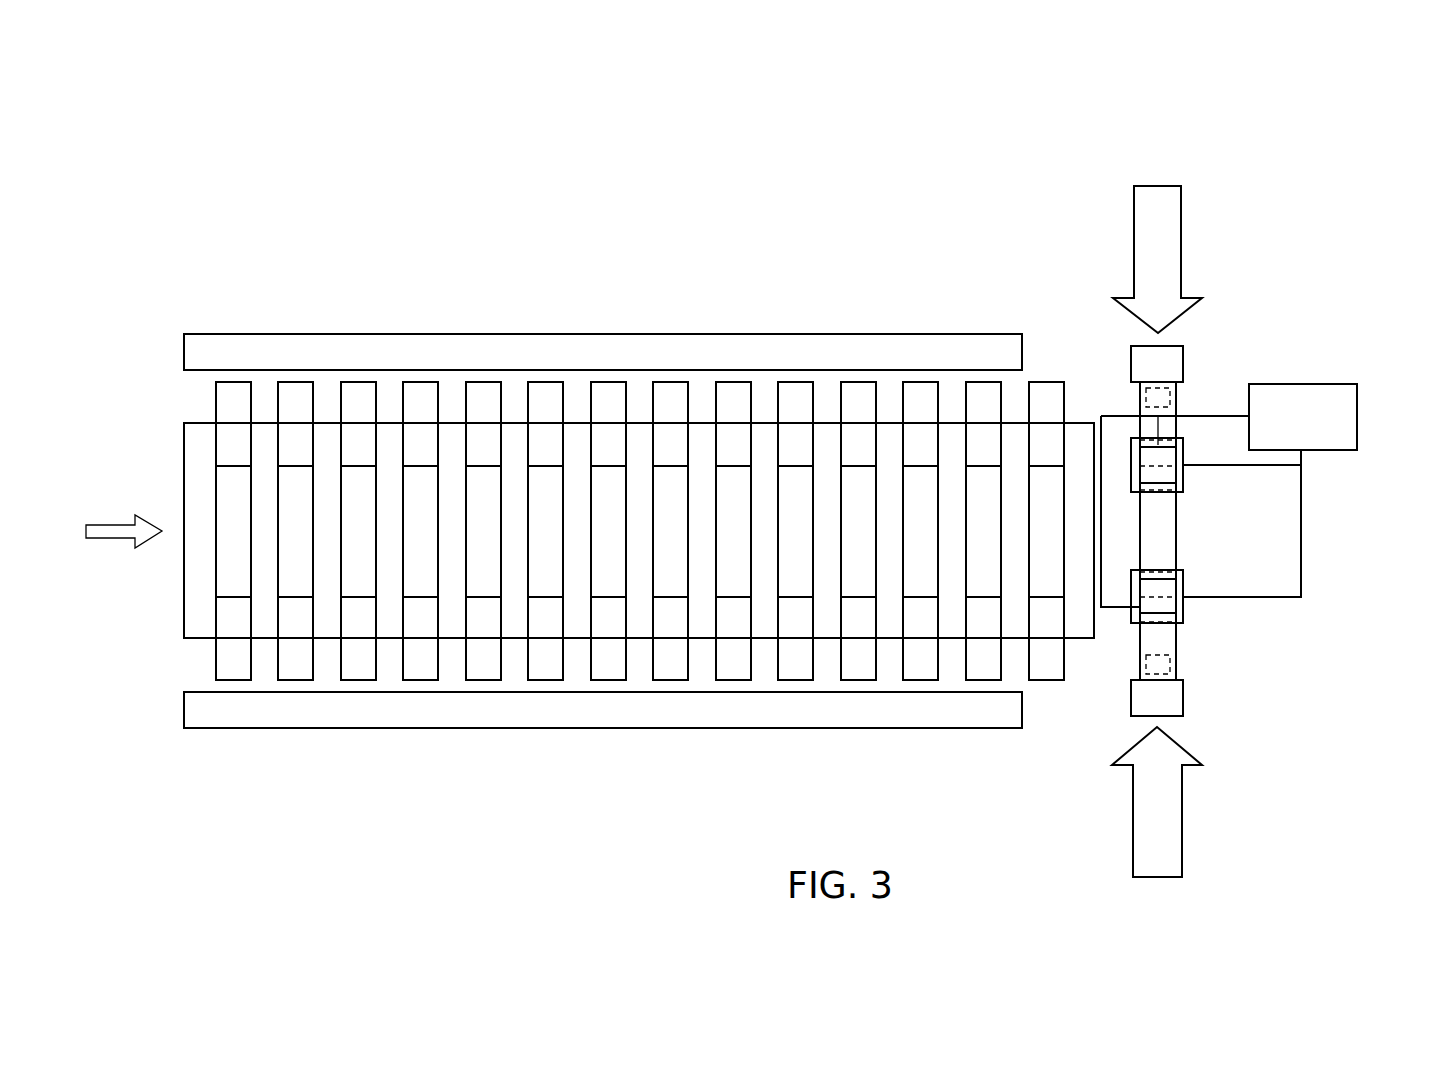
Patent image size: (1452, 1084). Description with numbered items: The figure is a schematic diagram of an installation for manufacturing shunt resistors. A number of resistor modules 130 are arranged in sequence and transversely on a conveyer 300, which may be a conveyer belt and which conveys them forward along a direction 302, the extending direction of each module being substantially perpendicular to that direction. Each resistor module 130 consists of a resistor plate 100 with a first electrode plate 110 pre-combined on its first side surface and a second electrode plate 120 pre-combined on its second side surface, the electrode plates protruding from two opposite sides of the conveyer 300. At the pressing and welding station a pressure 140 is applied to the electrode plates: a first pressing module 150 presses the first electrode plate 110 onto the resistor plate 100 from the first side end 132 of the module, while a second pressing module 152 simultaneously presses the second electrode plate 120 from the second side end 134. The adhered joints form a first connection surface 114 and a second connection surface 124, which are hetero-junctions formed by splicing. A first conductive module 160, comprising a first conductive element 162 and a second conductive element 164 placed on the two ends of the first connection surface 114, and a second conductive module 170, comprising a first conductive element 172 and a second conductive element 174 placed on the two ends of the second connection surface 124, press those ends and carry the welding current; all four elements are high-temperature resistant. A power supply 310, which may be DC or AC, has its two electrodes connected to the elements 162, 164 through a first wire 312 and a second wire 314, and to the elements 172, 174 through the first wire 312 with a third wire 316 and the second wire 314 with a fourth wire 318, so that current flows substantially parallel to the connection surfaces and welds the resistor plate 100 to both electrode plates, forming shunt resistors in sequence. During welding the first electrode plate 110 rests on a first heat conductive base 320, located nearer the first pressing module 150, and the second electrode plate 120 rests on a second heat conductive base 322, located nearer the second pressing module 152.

The resistor plate 100 is at (1047, 522).
The first electrode plate 110 is at (1047, 445).
The second electrode plate 120 is at (1045, 627).
The resistor module 130 is at (640, 424).
The first connection surface 114 is at (1131, 462).
The second connection surface 124 is at (1134, 604).
The first side end 132 is at (1168, 376).
The second side end 134 is at (1136, 694).
The pressure 140 is at (1158, 196).
The first pressing module 150 is at (1177, 355).
The second pressing module 152 is at (1172, 697).
The first conductive module 160 is at (1286, 493).
The first conductive element 162 is at (1160, 460).
The second conductive element 164 is at (1183, 477).
The second conductive module 170 is at (1286, 615).
The first conductive element 172 is at (1162, 608).
The second conductive element 174 is at (1183, 612).
The conveyer 300 is at (203, 461).
The direction 302 is at (105, 542).
The power supply 310 is at (1357, 415).
The first wire 312 is at (1197, 415).
The second wire 314 is at (1301, 457).
The third wire 316 is at (1108, 416).
The fourth wire 318 is at (1301, 565).
The first heat conductive base 320 is at (1131, 381).
The second heat conductive base 322 is at (1170, 663).